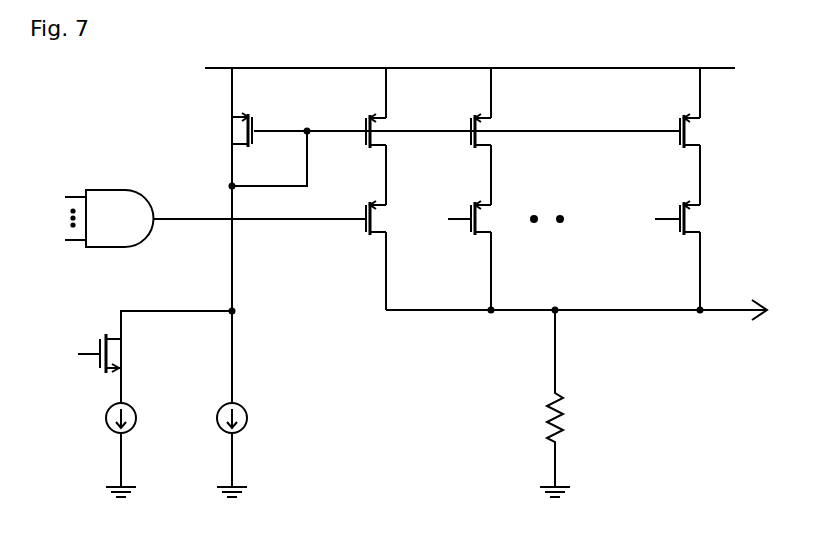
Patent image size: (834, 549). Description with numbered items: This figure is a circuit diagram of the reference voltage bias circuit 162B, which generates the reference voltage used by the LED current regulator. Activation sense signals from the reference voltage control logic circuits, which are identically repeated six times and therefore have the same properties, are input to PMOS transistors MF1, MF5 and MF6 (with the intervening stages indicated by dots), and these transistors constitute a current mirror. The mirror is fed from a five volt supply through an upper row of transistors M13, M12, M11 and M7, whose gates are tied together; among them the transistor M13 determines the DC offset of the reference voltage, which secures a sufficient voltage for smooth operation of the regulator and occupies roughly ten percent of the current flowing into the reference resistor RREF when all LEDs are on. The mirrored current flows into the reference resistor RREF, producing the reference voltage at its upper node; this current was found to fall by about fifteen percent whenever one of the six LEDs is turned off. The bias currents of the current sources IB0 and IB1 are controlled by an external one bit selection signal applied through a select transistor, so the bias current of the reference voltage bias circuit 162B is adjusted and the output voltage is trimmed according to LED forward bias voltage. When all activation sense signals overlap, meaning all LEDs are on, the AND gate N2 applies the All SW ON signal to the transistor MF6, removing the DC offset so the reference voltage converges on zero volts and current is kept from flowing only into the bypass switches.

The reference voltage bias circuit 162B is at (122, 112).
The transistor M13 is at (254, 145).
The transistor M12 is at (364, 145).
The transistor M11 is at (469, 145).
The transistor M7 is at (682, 145).
The PMOS transistor MF6 is at (359, 234).
The PMOS transistor MF5 is at (464, 234).
The PMOS transistor MF1 is at (676, 234).
The AND gate N2 is at (109, 218).
The current source IB1 is at (140, 420).
The current source IB0 is at (253, 420).
The reference resistor RREF is at (582, 403).